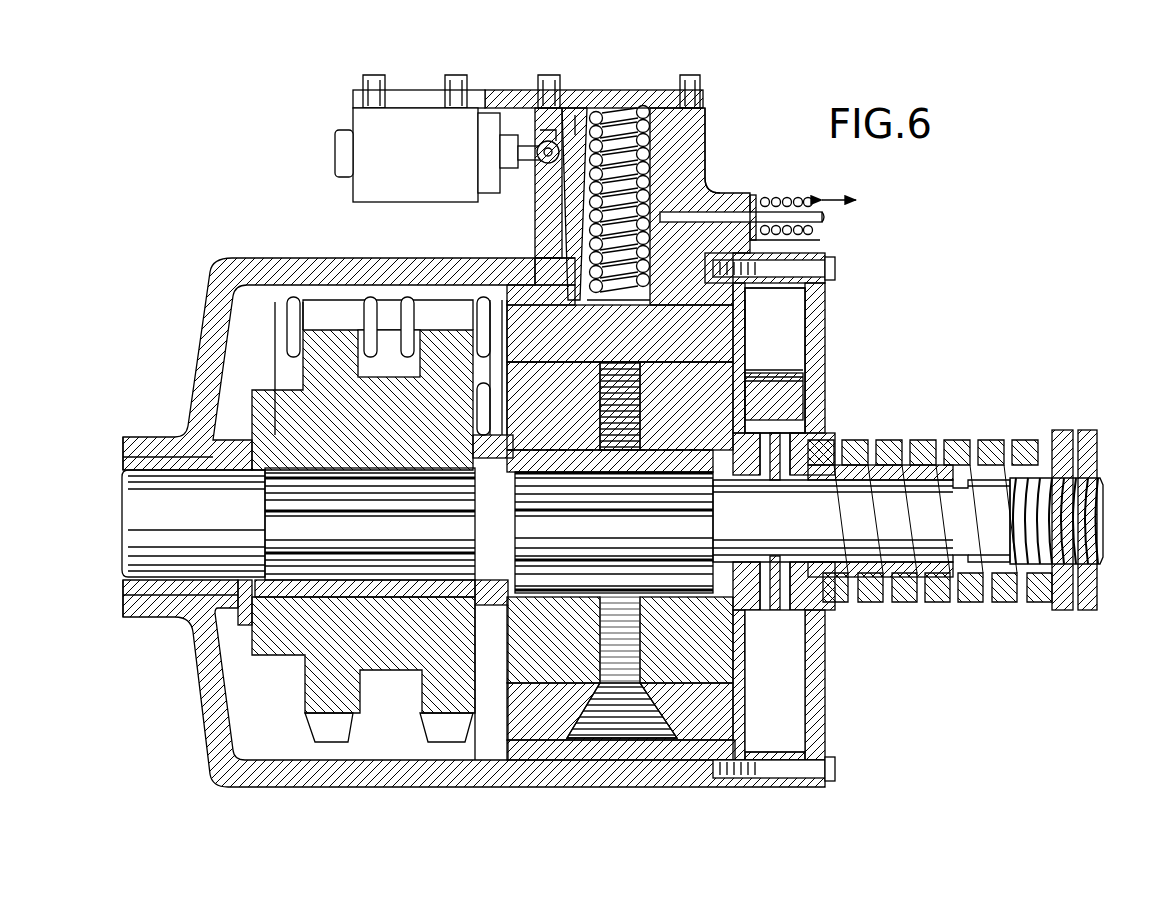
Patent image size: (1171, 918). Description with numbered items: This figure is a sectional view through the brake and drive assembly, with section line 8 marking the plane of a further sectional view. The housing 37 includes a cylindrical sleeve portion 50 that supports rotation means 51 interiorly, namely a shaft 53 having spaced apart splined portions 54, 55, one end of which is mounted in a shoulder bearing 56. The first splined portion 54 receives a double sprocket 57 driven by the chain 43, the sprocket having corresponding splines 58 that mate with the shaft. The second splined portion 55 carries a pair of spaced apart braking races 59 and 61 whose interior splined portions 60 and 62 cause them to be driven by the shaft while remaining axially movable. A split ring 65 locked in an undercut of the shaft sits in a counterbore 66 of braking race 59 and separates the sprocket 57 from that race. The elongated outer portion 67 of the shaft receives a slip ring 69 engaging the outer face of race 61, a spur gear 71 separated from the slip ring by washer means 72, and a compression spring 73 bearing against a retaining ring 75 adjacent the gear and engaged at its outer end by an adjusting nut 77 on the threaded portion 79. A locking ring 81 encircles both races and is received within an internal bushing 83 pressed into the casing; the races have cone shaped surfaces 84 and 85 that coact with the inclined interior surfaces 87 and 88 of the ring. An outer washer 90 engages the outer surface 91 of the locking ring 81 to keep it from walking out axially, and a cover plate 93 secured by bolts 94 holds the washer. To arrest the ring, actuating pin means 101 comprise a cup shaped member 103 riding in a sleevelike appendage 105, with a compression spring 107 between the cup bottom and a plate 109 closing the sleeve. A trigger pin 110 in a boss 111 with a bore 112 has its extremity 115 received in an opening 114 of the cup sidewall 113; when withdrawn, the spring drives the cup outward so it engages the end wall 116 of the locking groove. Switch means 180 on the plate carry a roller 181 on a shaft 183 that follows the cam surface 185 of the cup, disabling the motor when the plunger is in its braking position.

The section line 8- 8 is at (625, 100).
The housing 37 is at (283, 252).
The chain 43 is at (287, 335).
The cylindrical sleeve portion 50 is at (215, 312).
The rotation means 51 is at (118, 500).
The shaft 53 is at (208, 525).
The first splined portion 54 is at (343, 517).
The second splined portion 55 is at (585, 513).
The shoulder bearing 56 is at (125, 586).
The double sprocket 57 is at (305, 705).
The splines 58 is at (290, 450).
The braking race 59 is at (565, 650).
The interior splined portion 60 is at (620, 406).
The braking race 61 is at (698, 648).
The interior splined portion 62 is at (652, 455).
The split ring 65 is at (498, 606).
The counterbore 66 is at (513, 447).
The elongated outer portion 67 is at (848, 523).
The slip ring 69 is at (778, 427).
The spur gear 71 is at (790, 398).
The washer means 72 is at (825, 450).
The compression spring 73 is at (998, 440).
The retaining ring 75 is at (828, 605).
The adjusting nut 77 is at (1065, 432).
The threaded portion 79 is at (1085, 490).
The locking ring 81 is at (560, 340).
The internal bushing 83 is at (540, 306).
The cone surface 84 is at (573, 362).
The cone surface 85 is at (725, 347).
The inclined interior peripheral surface 87 is at (520, 372).
The inclined interior peripheral surface 88 is at (738, 370).
The outer washer 90 is at (745, 303).
The outer surface 91 is at (738, 322).
The cover plate 93 is at (815, 345).
The bolts 94 is at (838, 268).
The actuating pin means 101 is at (700, 172).
The cup shaped member 103 is at (706, 132).
The sleevelike appendage 105 is at (535, 216).
The compression spring 107 is at (630, 118).
The plate 109 is at (513, 78).
The trigger pin 110 is at (740, 208).
The boss 111 is at (785, 248).
The bore 112 is at (765, 200).
The sidewall 113 is at (570, 262).
The opening 114 is at (752, 232).
The extremity 115 is at (712, 203).
The end wall 116 is at (535, 262).
The switch means 180 is at (433, 155).
The roller 181 is at (540, 163).
The shaft 183 is at (540, 131).
The cam surface 185 is at (575, 140).